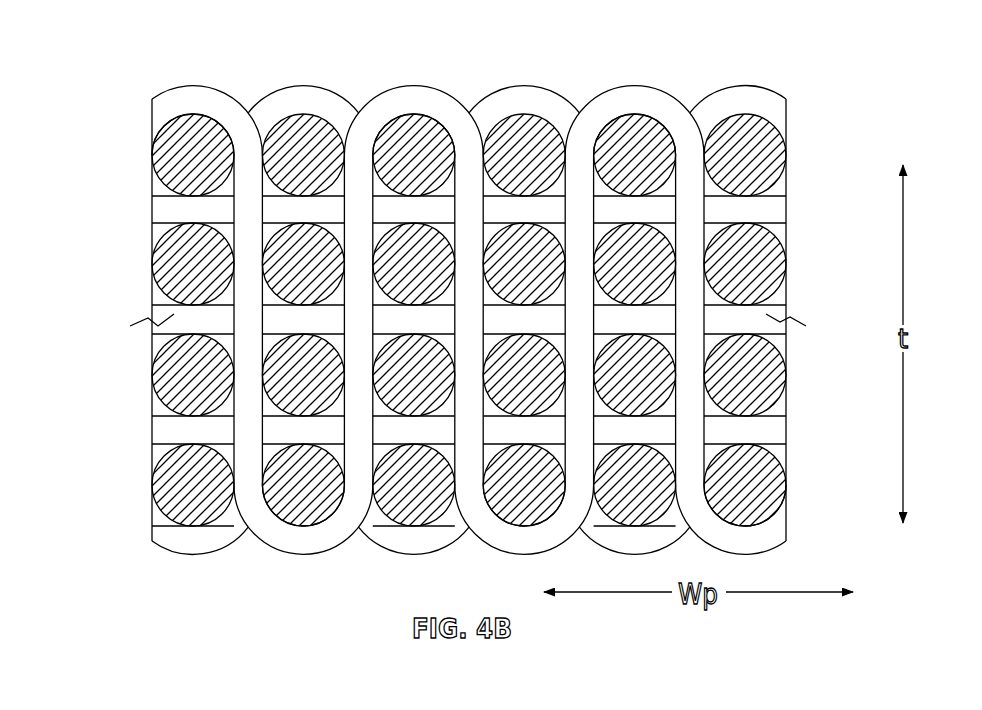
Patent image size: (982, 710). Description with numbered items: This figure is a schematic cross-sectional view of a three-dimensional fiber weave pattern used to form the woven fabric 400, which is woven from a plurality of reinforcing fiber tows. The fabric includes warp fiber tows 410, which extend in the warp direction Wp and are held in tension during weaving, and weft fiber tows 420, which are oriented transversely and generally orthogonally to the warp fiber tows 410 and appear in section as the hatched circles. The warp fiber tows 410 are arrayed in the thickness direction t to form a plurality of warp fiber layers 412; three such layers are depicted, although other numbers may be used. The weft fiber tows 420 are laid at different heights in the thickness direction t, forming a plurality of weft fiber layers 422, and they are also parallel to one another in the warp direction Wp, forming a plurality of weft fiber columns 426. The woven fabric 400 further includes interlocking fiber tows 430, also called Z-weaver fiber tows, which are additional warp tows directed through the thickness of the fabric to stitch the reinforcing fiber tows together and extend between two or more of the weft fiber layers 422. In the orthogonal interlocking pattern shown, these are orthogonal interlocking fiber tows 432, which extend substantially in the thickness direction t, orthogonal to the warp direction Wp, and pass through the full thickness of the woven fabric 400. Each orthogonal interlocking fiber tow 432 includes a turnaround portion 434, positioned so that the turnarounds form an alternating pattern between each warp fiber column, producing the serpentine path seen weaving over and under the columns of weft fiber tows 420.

The woven fabric 400 is at (124, 44).
The warp fiber tows 410 is at (288, 212).
The warp fiber layers 412 is at (798, 208).
The weft fiber tows 420 is at (522, 252).
The weft fiber layers 422 is at (116, 170).
The weft fiber columns 426 is at (188, 80).
The interlocking fiber tows 430 is at (469, 302).
The orthogonal interlocking fiber tows 432 is at (357, 418).
The turnaround portion 434 is at (447, 104).